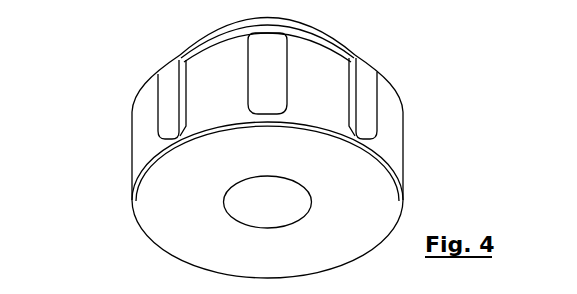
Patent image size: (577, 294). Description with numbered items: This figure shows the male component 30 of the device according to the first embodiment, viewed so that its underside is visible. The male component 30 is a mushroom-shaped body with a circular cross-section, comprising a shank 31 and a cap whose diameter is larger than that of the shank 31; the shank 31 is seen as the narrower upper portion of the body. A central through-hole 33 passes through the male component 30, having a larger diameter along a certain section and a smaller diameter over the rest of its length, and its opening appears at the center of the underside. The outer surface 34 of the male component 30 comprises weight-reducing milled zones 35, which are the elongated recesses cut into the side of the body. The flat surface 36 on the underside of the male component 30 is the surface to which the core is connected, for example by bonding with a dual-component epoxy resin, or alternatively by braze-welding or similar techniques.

The male component 30 is at (432, 107).
The shank 31 is at (362, 56).
The central through-hole 33 is at (253, 211).
The outer surface 34 is at (388, 148).
The weight-reducing milled zones 35 is at (170, 96).
The surface 36 is at (334, 240).